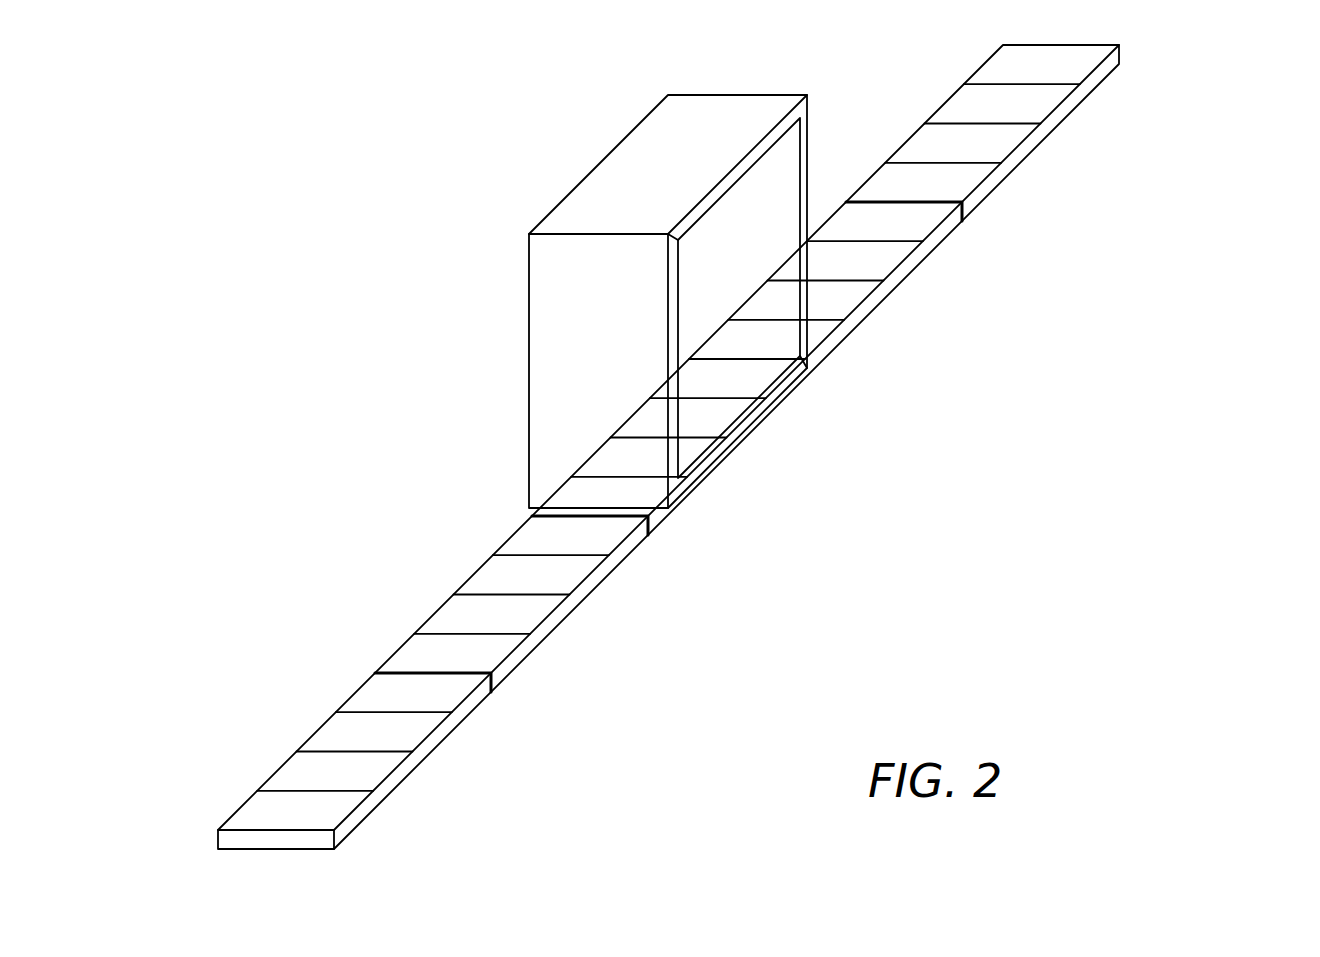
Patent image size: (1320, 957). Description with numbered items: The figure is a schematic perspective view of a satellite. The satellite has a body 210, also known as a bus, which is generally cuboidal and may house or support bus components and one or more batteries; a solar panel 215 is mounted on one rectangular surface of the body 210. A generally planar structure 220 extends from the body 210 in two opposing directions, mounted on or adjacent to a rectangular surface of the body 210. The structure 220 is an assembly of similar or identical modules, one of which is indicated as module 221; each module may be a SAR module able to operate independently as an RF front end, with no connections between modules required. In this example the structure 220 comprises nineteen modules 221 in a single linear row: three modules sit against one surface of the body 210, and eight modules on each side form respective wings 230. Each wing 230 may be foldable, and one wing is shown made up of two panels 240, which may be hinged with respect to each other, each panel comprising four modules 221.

The body 210 is at (618, 157).
The solar panel 215 is at (775, 168).
The generally planar structure 220 is at (1278, 83).
The module 221 is at (953, 102).
The wing 230 is at (1141, 64).
The panel 240 is at (343, 674).